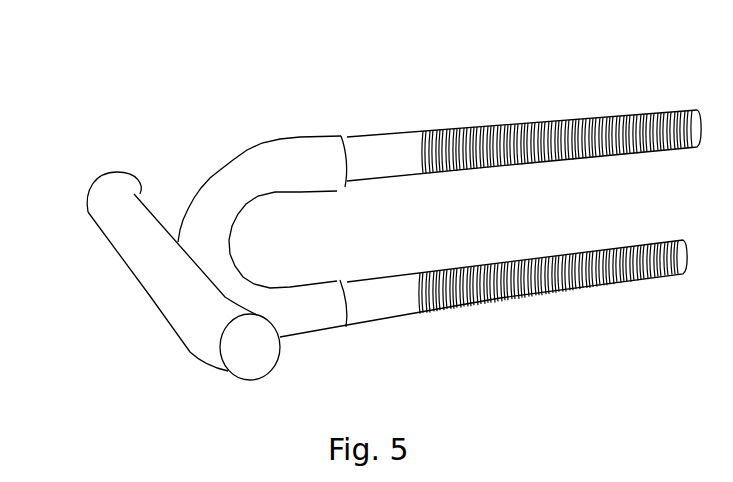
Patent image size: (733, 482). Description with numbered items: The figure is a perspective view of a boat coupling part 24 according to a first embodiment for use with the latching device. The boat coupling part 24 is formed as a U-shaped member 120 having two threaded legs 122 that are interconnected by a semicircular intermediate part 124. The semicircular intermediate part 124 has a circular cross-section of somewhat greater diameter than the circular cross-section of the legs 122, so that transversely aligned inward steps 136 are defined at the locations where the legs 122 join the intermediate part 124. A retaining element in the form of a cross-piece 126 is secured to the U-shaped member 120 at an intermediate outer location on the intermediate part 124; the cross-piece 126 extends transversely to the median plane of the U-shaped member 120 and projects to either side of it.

The boat coupling part 24 is at (168, 68).
The U-shaped member 120 is at (278, 138).
The threaded legs 122 is at (528, 122).
The semicircular intermediate part 124 is at (223, 197).
The cross-piece 126 is at (135, 238).
The inward steps 136 is at (341, 135).